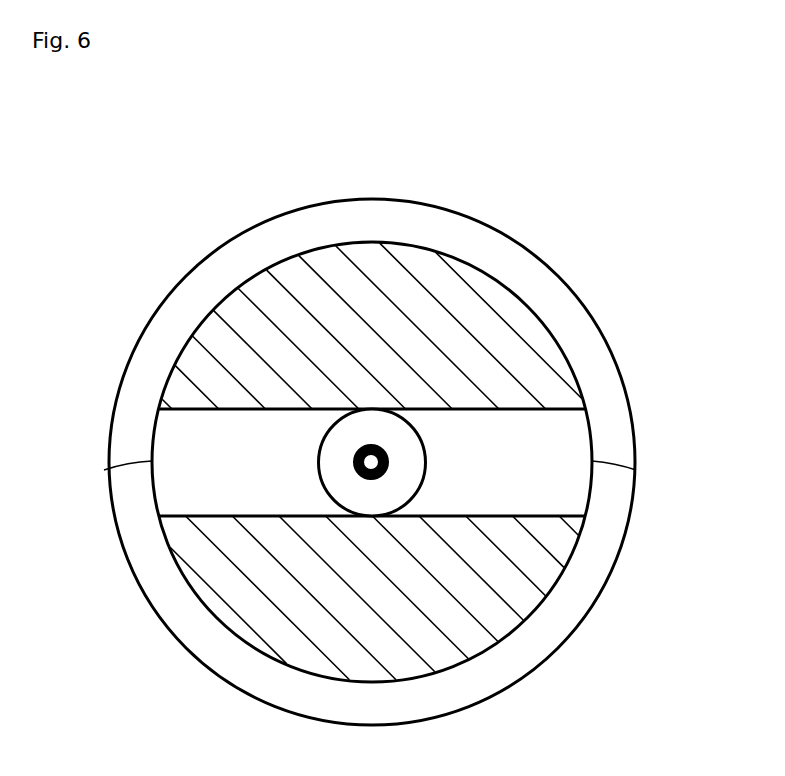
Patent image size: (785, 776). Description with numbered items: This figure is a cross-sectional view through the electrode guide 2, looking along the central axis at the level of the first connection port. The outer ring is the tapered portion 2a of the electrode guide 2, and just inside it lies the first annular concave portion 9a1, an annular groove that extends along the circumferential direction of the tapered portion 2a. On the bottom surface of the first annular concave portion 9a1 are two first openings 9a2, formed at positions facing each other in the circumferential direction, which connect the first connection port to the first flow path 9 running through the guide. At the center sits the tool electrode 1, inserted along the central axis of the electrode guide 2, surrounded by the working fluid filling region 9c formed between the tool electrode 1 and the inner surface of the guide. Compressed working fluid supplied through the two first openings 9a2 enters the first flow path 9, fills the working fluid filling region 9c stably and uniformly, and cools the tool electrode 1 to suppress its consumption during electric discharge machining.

The electrode guide 2 is at (438, 420).
The tapered portion 2a is at (497, 227).
The first flow path 9 is at (500, 470).
The first annular concave portion 9a1 is at (567, 617).
The first openings 9a2 is at (104, 470).
The working fluid filling region 9c is at (345, 476).
The tool electrode 1 is at (390, 452).